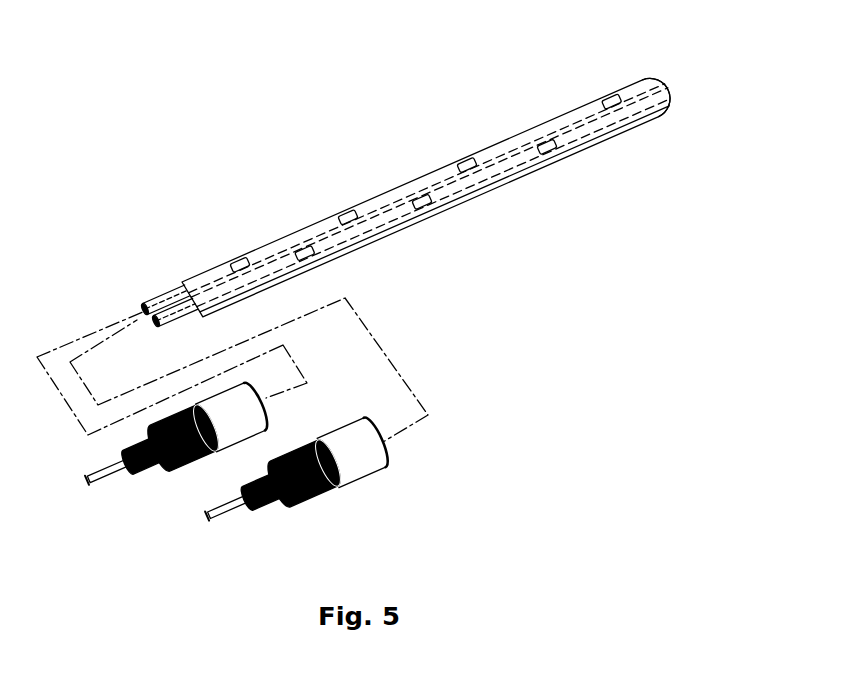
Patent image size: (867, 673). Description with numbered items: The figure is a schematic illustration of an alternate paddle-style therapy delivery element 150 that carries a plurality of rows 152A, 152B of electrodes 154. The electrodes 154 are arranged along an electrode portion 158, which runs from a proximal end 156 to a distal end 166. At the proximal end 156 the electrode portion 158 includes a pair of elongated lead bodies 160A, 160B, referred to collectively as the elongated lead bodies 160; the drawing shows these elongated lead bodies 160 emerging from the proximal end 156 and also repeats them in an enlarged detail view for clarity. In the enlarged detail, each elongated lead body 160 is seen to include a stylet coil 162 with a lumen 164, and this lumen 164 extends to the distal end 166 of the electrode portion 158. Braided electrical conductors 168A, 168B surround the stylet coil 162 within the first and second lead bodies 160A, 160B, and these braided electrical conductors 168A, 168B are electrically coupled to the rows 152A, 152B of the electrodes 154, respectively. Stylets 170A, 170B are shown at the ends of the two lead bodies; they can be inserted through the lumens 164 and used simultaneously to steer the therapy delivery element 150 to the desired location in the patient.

The paddle-style therapy delivery element 150 is at (278, 160).
The row of electrodes 152A is at (528, 130).
The row of electrodes 152B is at (583, 132).
The electrodes 154 is at (460, 158).
The proximal end 156 is at (201, 277).
The electrode portion 158 is at (482, 147).
The elongated lead bodies 160 is at (173, 294).
The elongated lead body 160A is at (158, 294).
The elongated lead body 160B is at (165, 324).
The stylet coil 162 is at (156, 471).
The lumen 164 is at (127, 478).
The distal end 166 is at (662, 73).
The braided electrical conductor 168A is at (203, 459).
The braided electrical conductor 168B is at (323, 493).
The stylet 170A is at (96, 468).
The stylet 170B is at (213, 514).